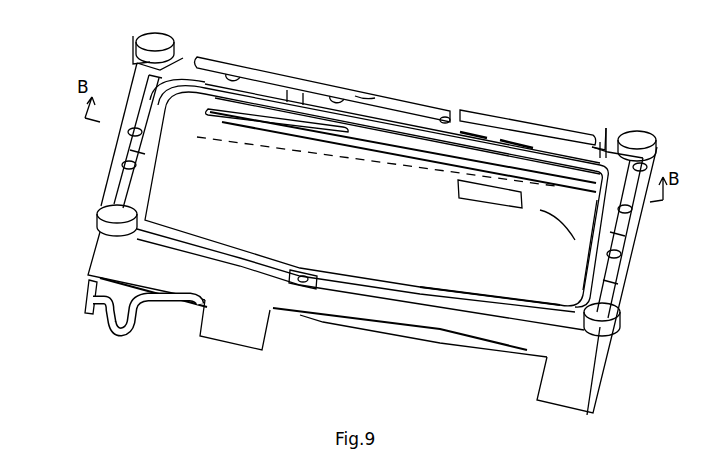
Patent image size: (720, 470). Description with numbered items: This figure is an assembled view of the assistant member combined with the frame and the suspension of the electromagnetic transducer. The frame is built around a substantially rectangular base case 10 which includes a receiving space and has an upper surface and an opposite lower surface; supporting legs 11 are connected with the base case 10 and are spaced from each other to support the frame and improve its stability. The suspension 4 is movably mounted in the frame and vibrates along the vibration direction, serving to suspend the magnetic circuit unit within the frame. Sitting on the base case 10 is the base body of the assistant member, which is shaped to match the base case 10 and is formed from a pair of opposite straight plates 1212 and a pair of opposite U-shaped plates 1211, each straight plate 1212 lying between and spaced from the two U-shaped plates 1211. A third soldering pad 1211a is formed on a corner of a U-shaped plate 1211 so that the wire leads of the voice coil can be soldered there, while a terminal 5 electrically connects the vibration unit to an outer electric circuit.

The U-shaped plate 1211 is at (157, 100).
The third soldering pad 1211a is at (182, 77).
The straight plate 1212 is at (312, 97).
The suspension 4 is at (252, 110).
The base case 10 is at (107, 262).
The terminal 5 is at (87, 297).
The supporting leg 11 is at (233, 330).